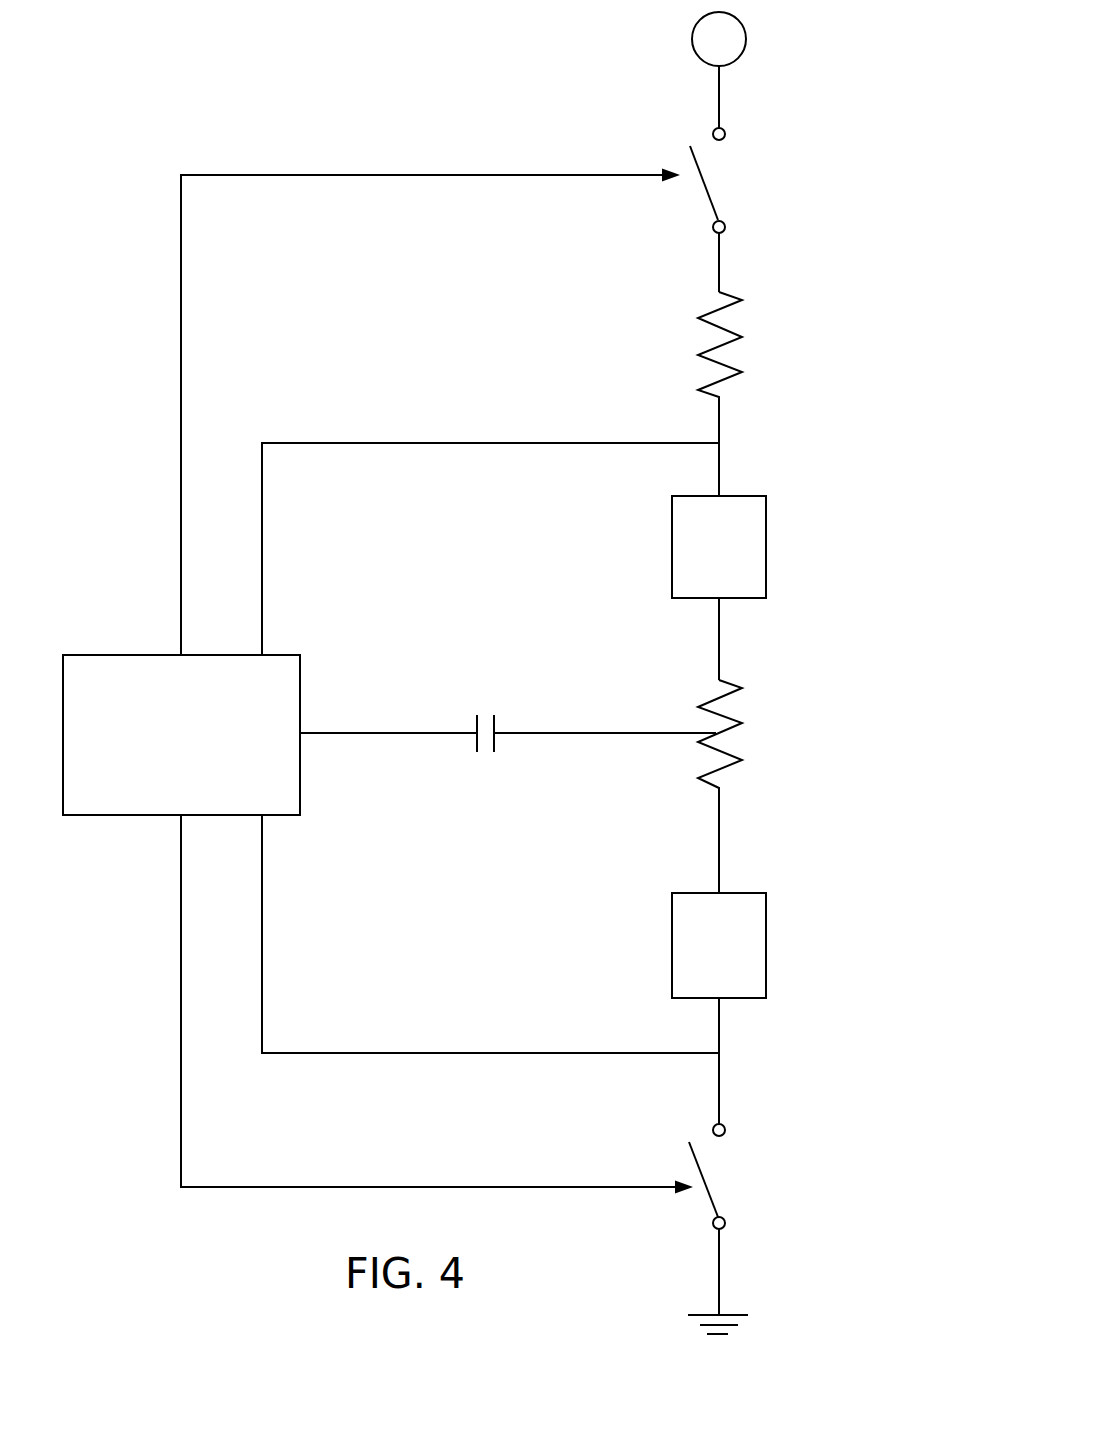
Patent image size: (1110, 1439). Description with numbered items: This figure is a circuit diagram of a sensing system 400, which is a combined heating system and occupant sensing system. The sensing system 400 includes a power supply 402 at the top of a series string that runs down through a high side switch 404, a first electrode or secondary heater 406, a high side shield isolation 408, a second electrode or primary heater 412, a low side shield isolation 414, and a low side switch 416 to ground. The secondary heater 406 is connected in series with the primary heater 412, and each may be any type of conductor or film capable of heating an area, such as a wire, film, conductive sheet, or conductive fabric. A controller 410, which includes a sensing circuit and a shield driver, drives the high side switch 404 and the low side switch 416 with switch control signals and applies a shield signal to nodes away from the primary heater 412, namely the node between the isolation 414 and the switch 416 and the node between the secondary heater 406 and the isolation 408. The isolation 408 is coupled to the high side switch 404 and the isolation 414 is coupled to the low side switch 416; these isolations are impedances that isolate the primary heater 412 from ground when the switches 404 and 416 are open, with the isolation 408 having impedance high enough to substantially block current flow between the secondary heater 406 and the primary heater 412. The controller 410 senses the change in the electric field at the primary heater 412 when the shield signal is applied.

The sensing system 400 is at (145, 88).
The power supply 402 is at (747, 39).
The high side switch 404 is at (760, 170).
The secondary heater 406 is at (775, 328).
The high side shield isolation 408 is at (766, 548).
The controller 410 is at (288, 652).
The primary heater 412 is at (762, 683).
The low side shield isolation 414 is at (766, 940).
The low side switch 416 is at (762, 1176).